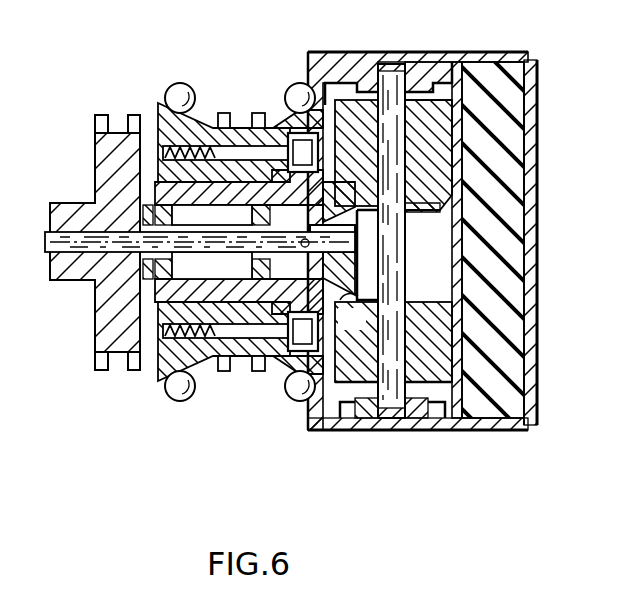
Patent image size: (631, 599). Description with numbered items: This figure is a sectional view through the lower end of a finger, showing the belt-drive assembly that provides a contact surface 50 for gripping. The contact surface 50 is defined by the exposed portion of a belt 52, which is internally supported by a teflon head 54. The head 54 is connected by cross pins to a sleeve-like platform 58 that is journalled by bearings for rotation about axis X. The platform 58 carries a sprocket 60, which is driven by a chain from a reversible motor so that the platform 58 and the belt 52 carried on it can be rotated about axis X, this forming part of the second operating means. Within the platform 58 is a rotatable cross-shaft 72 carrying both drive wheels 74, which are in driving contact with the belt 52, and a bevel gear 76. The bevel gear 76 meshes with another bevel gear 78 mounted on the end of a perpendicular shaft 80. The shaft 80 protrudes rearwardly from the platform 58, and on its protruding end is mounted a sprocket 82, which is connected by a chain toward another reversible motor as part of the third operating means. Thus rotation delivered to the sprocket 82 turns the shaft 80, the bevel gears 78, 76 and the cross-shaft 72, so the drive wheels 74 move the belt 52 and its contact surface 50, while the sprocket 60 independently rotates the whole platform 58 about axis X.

The contact surface 50 is at (527, 213).
The belt 52 is at (527, 398).
The teflon head 54 is at (478, 412).
The platform 58 is at (366, 432).
The sprocket 60 is at (245, 355).
The cross-shaft 72 is at (405, 256).
The drive wheels 74 is at (428, 98).
The bevel gear 76 is at (433, 206).
The bevel gear 78 is at (356, 342).
The shaft 80 is at (212, 236).
The sprocket 82 is at (106, 320).